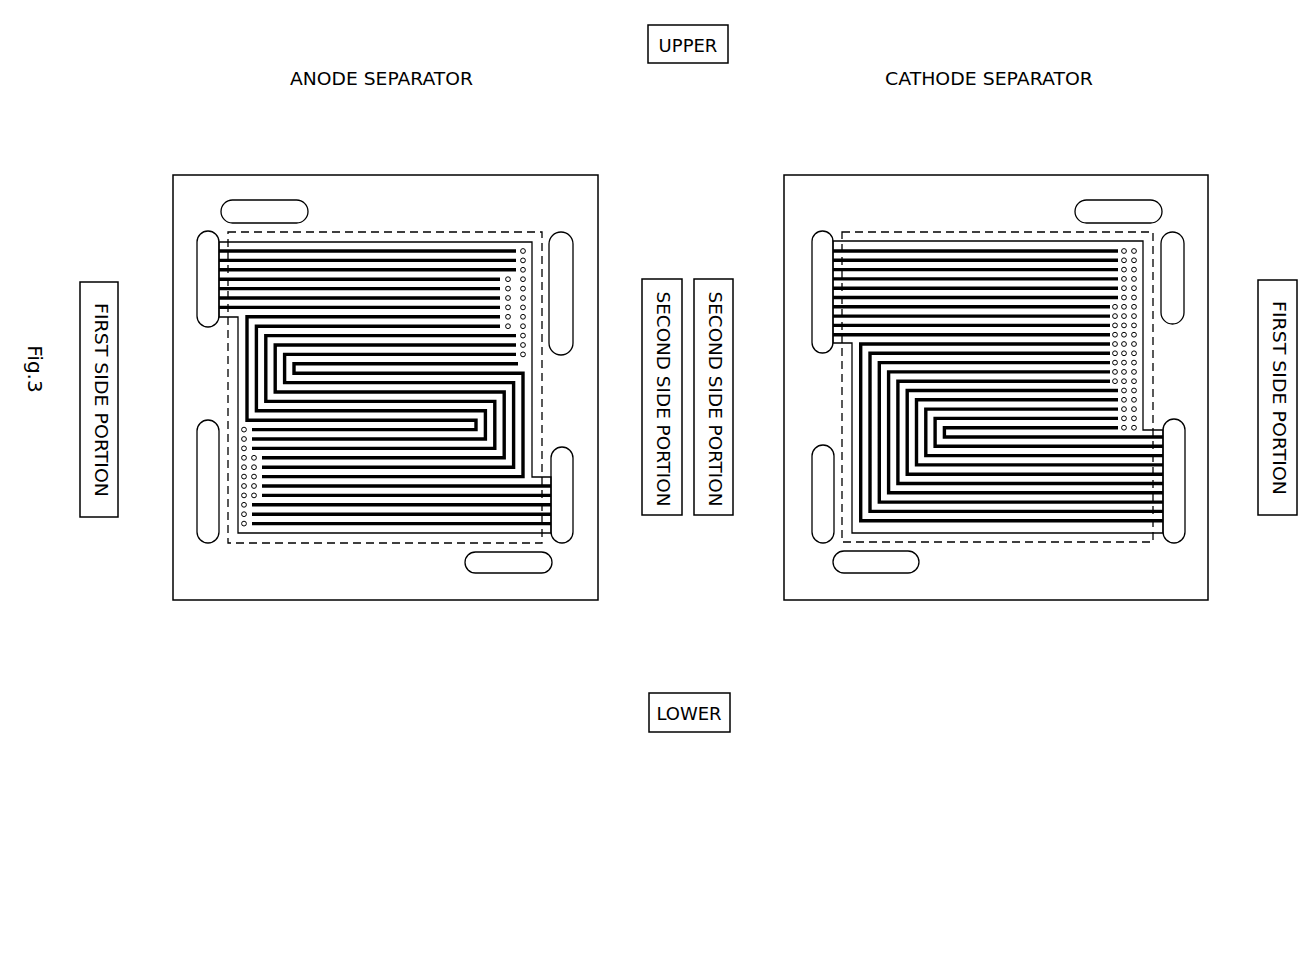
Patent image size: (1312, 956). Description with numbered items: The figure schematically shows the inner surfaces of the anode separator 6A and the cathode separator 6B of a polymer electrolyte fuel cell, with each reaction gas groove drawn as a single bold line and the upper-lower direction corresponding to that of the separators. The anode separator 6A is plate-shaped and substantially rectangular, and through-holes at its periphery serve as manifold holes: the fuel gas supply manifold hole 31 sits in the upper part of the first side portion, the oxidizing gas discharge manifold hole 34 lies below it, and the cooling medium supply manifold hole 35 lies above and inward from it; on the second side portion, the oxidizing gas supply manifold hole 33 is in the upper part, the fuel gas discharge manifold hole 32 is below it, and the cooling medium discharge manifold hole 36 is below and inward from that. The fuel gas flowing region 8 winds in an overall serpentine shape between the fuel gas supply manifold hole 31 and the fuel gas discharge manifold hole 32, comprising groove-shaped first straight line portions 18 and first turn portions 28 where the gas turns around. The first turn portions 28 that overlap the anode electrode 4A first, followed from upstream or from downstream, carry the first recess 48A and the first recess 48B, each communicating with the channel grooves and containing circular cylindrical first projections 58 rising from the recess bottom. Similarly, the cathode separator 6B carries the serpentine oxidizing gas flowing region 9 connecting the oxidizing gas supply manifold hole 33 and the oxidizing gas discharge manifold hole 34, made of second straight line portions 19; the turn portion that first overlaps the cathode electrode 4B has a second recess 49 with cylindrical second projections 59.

The anode separator 6A is at (358, 121).
The cathode separator 6B is at (980, 121).
The fuel gas flowing region 8 is at (437, 234).
The oxidizing gas flowing region 9 is at (1012, 234).
The first straight line portions 18 is at (384, 249).
The second straight line portions 19 is at (957, 249).
The first turn portions 28 is at (245, 363).
The fuel gas supply manifold hole 31 is at (205, 278).
The fuel gas discharge manifold hole 32 is at (562, 493).
The oxidizing gas supply manifold hole 33 is at (562, 280).
The oxidizing gas discharge manifold hole 34 is at (210, 500).
The cooling medium supply manifold hole 35 is at (262, 205).
The cooling medium discharge manifold hole 36 is at (515, 566).
The anode electrode 4A is at (228, 412).
The cathode electrode 4B is at (842, 405).
The first recess 48A is at (519, 246).
The first recess 48B is at (242, 440).
The second recess 49 is at (1138, 346).
The first projections 58 is at (246, 524).
The second projections 59 is at (1137, 323).